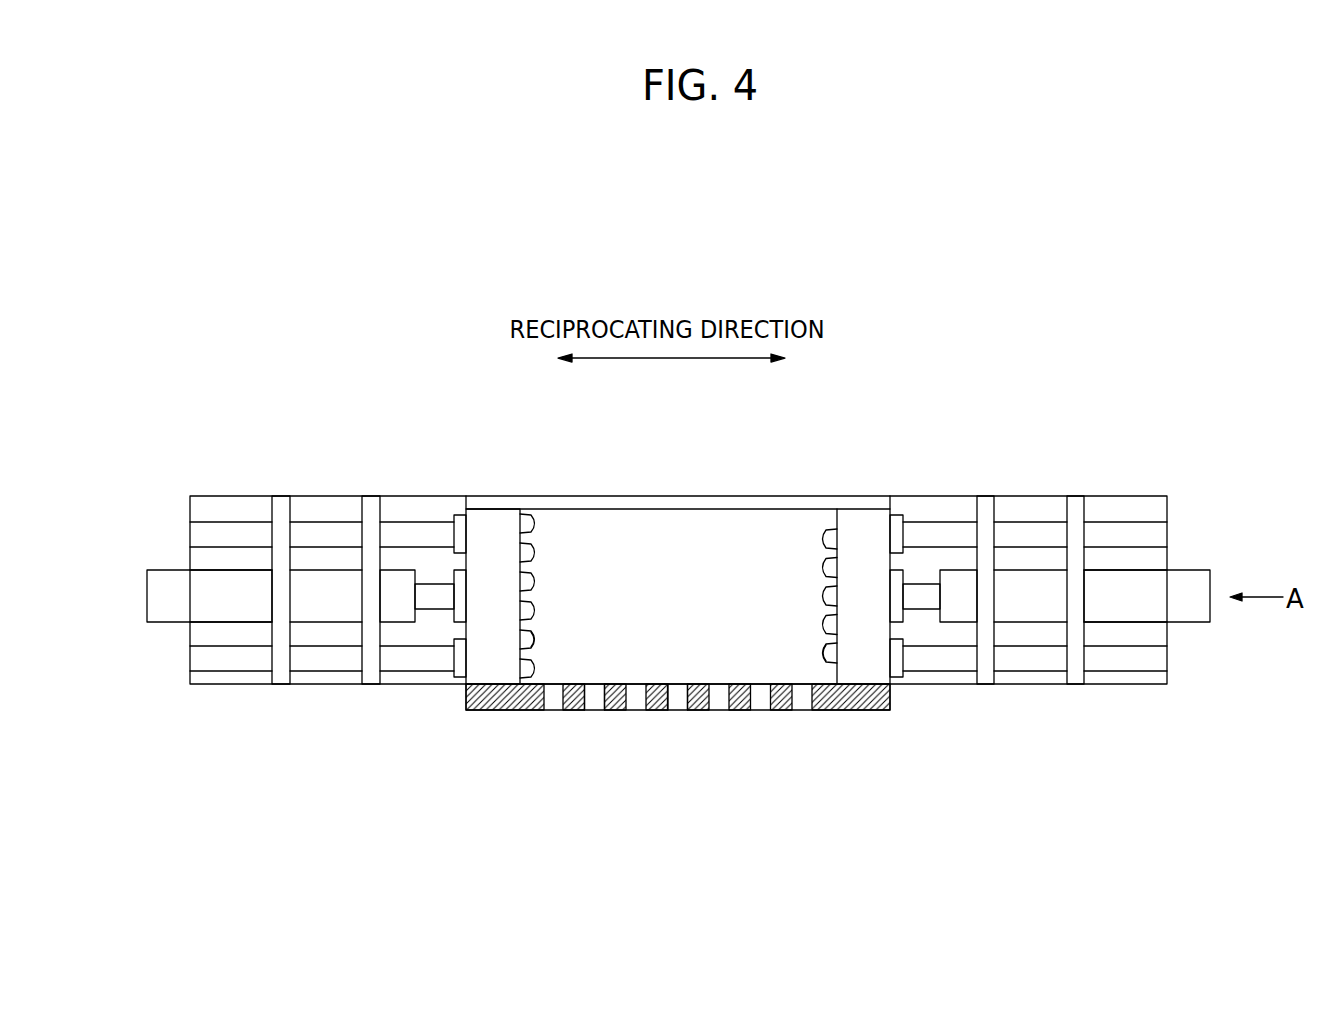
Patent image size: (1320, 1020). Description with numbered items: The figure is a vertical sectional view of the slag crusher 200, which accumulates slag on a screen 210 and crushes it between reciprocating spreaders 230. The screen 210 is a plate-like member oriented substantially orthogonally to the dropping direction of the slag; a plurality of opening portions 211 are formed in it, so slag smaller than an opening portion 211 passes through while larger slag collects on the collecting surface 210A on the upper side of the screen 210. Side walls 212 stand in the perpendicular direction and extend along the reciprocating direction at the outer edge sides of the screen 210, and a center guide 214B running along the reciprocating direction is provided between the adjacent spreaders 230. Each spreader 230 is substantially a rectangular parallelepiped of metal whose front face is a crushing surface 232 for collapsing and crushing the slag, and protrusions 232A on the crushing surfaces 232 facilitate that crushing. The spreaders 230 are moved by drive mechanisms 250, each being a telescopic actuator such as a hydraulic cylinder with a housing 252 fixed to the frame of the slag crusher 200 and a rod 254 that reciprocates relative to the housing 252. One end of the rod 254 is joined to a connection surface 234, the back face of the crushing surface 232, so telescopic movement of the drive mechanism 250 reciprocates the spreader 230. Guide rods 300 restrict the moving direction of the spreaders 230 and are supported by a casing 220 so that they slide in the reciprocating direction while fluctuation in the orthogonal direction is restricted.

The slag crusher 200 is at (1149, 284).
The screen 210 is at (657, 720).
The collecting surface 210A is at (678, 682).
The opening portion 211 is at (590, 692).
The side wall 212 is at (1025, 495).
The center guide 214B is at (737, 508).
The casing 220 is at (280, 685).
The spreader 230 is at (490, 512).
The crushing surface 232 is at (521, 537).
The protrusion 232A is at (537, 641).
The connection surface 234 is at (462, 630).
The drive mechanism 250 is at (145, 633).
The housing 252 is at (222, 623).
The rod 254 is at (429, 516).
The guide rod 300 is at (250, 518).